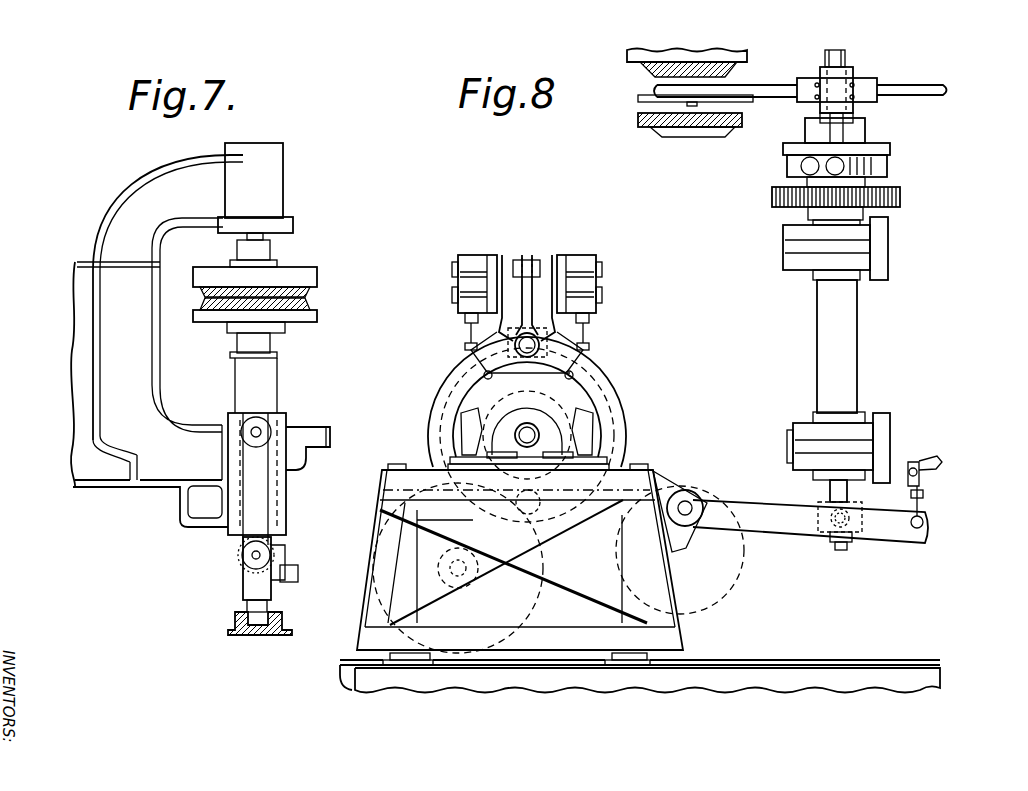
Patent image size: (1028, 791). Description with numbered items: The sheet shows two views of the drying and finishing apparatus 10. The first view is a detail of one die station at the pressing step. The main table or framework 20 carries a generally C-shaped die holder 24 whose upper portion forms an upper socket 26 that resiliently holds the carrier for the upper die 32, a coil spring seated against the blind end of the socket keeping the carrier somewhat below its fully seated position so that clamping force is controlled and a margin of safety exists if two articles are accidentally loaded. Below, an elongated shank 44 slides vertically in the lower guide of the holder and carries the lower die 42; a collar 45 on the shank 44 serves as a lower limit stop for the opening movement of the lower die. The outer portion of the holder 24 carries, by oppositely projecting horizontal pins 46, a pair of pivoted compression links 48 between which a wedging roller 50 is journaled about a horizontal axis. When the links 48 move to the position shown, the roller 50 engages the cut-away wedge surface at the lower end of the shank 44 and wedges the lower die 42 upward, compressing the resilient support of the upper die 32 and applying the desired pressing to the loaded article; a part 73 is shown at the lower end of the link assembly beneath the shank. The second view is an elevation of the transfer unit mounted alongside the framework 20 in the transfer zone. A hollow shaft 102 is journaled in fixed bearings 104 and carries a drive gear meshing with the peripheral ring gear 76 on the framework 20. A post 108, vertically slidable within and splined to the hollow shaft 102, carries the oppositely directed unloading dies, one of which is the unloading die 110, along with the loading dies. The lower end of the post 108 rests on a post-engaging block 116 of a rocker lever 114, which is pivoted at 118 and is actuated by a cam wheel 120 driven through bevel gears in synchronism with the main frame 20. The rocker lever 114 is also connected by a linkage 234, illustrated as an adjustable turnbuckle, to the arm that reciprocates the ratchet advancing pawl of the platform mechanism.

In FIG. 7, the main table or framework 20 is at (77, 287).
In FIG. 7, the die holder 24 is at (137, 361).
In FIG. 7, the upper socket 26 is at (273, 192).
In FIG. 7, the upper die 32 is at (312, 292).
In FIG. 7, the lower die 42 is at (314, 303).
In FIG. 7, the shank 44 is at (265, 343).
In FIG. 7, the collar 45 is at (278, 356).
In FIG. 7, the horizontal pin 46 is at (262, 432).
In FIG. 7, the compression link 48 is at (250, 583).
In FIG. 7, the wedging roller 50 is at (242, 556).
In FIG. 7, the base pad 73 is at (253, 625).
In FIG. 7, the peripheral ring gear 76 is at (331, 440).
In FIG. 8, the gear 10 is at (900, 194).
In FIG. 8, the hollow shaft 102 is at (860, 366).
In FIG. 8, the fixed bearing 104 is at (800, 263).
In FIG. 8, the post 108 is at (868, 128).
In FIG. 8, the unloading die 110 is at (753, 98).
In FIG. 8, the rocker lever 114 is at (793, 562).
In FIG. 8, the post-engaging block 116 is at (862, 501).
In FIG. 8, the pivot 118 is at (690, 495).
In FIG. 8, the cam wheel 120 is at (436, 445).
In FIG. 8, the linkage 234 is at (926, 505).